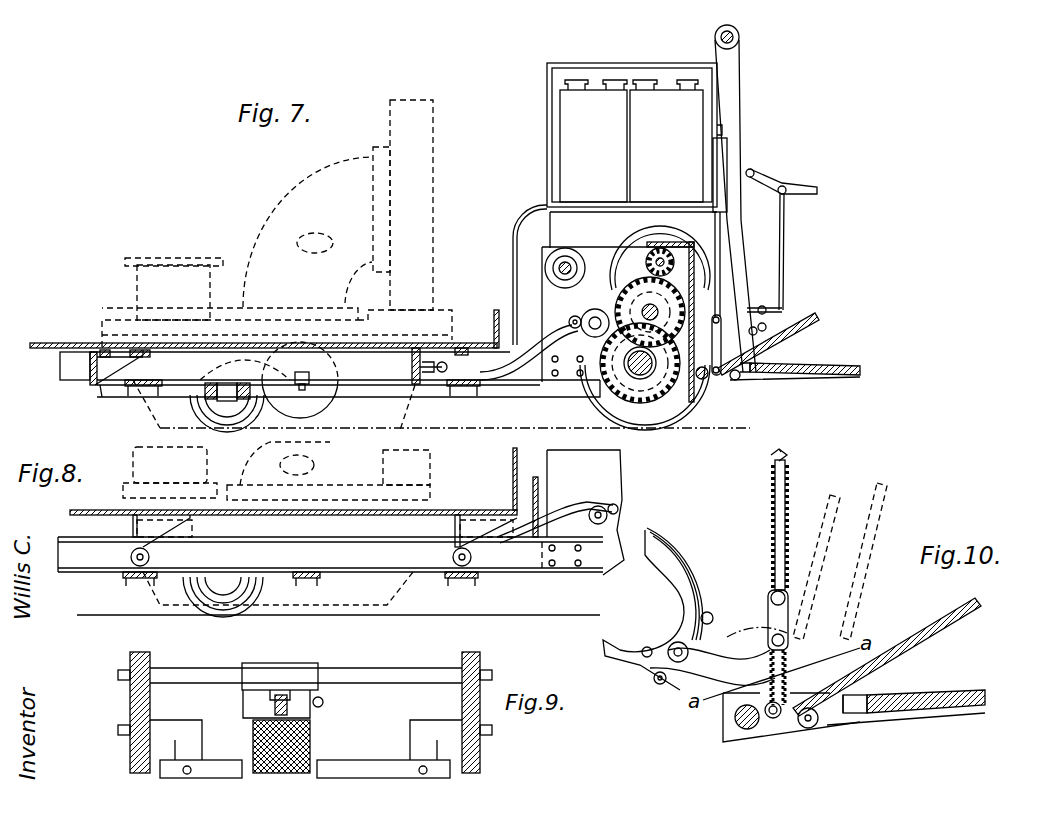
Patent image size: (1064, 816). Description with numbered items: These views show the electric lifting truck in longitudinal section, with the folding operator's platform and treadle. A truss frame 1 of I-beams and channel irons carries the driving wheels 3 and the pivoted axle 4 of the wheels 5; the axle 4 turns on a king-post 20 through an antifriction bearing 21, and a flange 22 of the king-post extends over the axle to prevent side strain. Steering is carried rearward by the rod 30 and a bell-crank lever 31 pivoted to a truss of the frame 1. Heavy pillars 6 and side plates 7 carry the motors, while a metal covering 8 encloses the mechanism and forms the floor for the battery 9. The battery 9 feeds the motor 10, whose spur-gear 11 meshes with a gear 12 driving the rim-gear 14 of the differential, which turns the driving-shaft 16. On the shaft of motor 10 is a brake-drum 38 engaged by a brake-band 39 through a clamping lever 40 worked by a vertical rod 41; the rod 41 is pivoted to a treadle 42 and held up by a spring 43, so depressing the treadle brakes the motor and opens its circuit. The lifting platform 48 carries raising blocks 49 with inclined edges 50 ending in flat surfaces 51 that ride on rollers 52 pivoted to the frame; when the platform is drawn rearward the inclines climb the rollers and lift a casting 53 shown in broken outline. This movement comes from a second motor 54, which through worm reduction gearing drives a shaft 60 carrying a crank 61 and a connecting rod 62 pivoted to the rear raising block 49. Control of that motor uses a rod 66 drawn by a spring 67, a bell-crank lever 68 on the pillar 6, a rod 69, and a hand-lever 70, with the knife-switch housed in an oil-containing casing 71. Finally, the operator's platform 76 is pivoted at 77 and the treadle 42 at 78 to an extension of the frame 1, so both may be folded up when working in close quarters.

In FIG. 7, the truss frame 1 is at (285, 366).
In FIG. 8, the truss frame 1 is at (330, 576).
In FIG. 10, the truss frame 1 is at (722, 726).
In FIG. 7, the driving wheels 3 is at (600, 412).
In FIG. 7, the pivoted axle 4 is at (205, 396).
In FIG. 7, the wheels 5 is at (262, 412).
In FIG. 8, the wheels 5 is at (192, 591).
In FIG. 7, the pillars 6 is at (745, 82).
In FIG. 7, the side plates 7 is at (558, 233).
In FIG. 8, the side plates 7 is at (585, 512).
In FIG. 7, the metal covering 8 is at (512, 228).
In FIG. 7, the battery 9 is at (640, 460).
In FIG. 7, the motor 10 is at (638, 233).
In FIG. 7, the spur-gear 11 is at (645, 255).
In FIG. 7, the gear 12 is at (620, 298).
In FIG. 7, the rim-gear 14 is at (634, 363).
In FIG. 7, the driving-shaft 16 is at (640, 363).
In FIG. 7, the king-post 20 is at (225, 356).
In FIG. 7, the antifriction bearing 21 is at (200, 414).
In FIG. 7, the extension or flange 22 is at (245, 376).
In FIG. 7, the rod 30 is at (502, 398).
In FIG. 7, the bell-crank lever 31 is at (308, 400).
In FIG. 10, the brake-drum 38 is at (690, 562).
In FIG. 10, the brake-band 39 is at (710, 580).
In FIG. 7, the brake band clamping lever 40 is at (722, 340).
In FIG. 10, the brake band clamping lever 40 is at (730, 637).
In FIG. 7, the vertical rod 41 is at (719, 280).
In FIG. 9, the vertical rod 41 is at (246, 702).
In FIG. 10, the vertical rod 41 is at (775, 510).
In FIG. 7, the treadle 42 is at (816, 330).
In FIG. 9, the treadle 42 is at (312, 740).
In FIG. 10, the treadle 42 is at (906, 632).
In FIG. 9, the spring 43 is at (324, 702).
In FIG. 10, the spring 43 is at (790, 490).
In FIG. 7, the lifting platform 48 is at (76, 343).
In FIG. 8, the lifting platform 48 is at (80, 510).
In FIG. 7, the raising blocks 49 is at (90, 382).
In FIG. 8, the raising blocks 49 is at (133, 531).
In FIG. 7, the inclined bearing edges 50 is at (118, 385).
In FIG. 8, the inclined bearing edges 50 is at (175, 530).
In FIG. 7, the flat horizontal bearing surfaces 51 is at (100, 395).
In FIG. 8, the flat horizontal bearing surfaces 51 is at (131, 553).
In FIG. 8, the rollers 52 is at (150, 556).
In FIG. 7, the heavy casting 53 is at (277, 223).
In FIG. 8, the heavy casting 53 is at (276, 471).
In FIG. 7, the motor 54 is at (545, 268).
In FIG. 7, the shaft 60 is at (595, 317).
In FIG. 8, the shaft 60 is at (590, 522).
In FIG. 7, the crank 61 is at (572, 316).
In FIG. 8, the crank 61 is at (610, 502).
In FIG. 7, the connecting rod 62 is at (524, 352).
In FIG. 8, the connecting rod 62 is at (562, 520).
In FIG. 7, the rod 66 is at (753, 338).
In FIG. 7, the spring 67 is at (768, 327).
In FIG. 7, the bell-crank lever 68 is at (785, 307).
In FIG. 7, the rod 69 is at (785, 262).
In FIG. 7, the hand-lever 70 is at (770, 178).
In FIG. 7, the oil-containing casing 71 is at (722, 160).
In FIG. 7, the operator's platform 76 is at (822, 366).
In FIG. 9, the operator's platform 76 is at (365, 766).
In FIG. 10, the operator's platform 76 is at (972, 695).
In FIG. 7, the pivot 77 is at (736, 382).
In FIG. 10, the pivot 77 is at (806, 730).
In FIG. 7, the pivot 78 is at (703, 380).
In FIG. 9, the pivot 78 is at (330, 672).
In FIG. 10, the pivot 78 is at (746, 730).